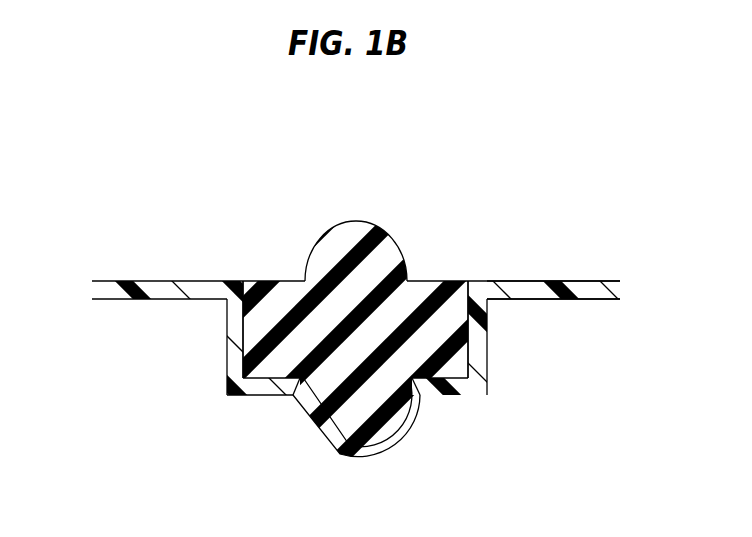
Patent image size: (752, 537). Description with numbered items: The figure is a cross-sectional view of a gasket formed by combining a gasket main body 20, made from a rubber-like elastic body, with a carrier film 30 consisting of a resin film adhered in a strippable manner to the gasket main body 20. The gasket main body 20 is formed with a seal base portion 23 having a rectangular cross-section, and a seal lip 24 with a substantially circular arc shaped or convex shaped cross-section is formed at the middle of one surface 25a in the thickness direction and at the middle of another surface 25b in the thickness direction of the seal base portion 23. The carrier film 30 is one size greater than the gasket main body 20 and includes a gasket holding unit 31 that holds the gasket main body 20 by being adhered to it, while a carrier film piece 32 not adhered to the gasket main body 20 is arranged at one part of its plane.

The gasket main body 20 is at (334, 322).
The seal base portion 23 is at (325, 385).
The seal lip 24 is at (359, 228).
The one surface 25a is at (250, 281).
The another surface 25b is at (462, 381).
The carrier film 30 is at (405, 348).
The gasket holding unit 31 is at (250, 397).
The carrier film piece 32 is at (570, 298).